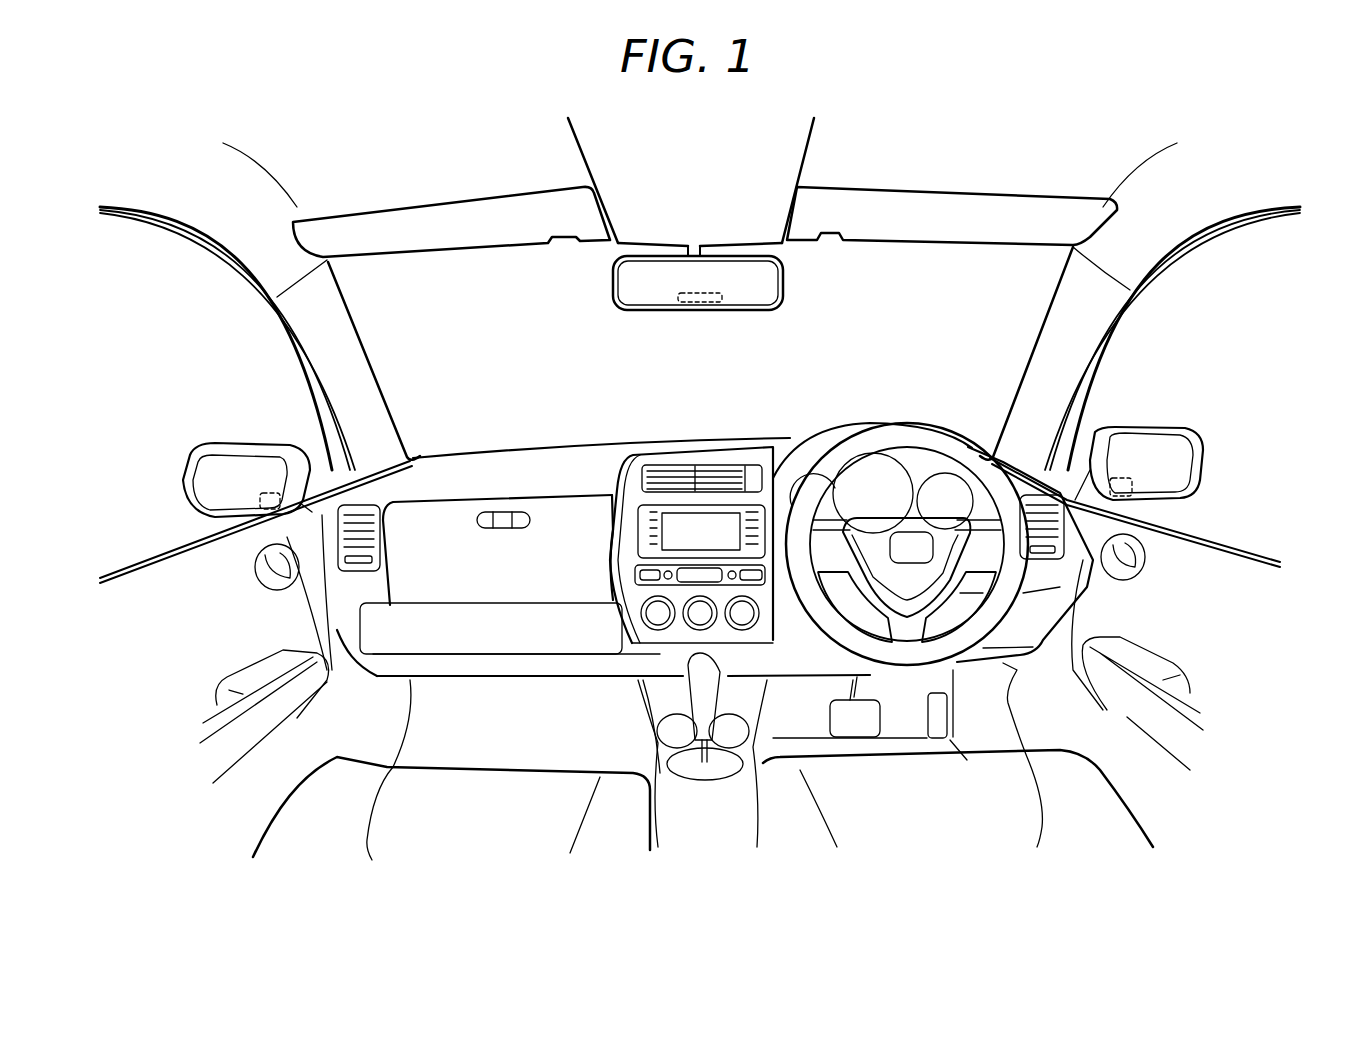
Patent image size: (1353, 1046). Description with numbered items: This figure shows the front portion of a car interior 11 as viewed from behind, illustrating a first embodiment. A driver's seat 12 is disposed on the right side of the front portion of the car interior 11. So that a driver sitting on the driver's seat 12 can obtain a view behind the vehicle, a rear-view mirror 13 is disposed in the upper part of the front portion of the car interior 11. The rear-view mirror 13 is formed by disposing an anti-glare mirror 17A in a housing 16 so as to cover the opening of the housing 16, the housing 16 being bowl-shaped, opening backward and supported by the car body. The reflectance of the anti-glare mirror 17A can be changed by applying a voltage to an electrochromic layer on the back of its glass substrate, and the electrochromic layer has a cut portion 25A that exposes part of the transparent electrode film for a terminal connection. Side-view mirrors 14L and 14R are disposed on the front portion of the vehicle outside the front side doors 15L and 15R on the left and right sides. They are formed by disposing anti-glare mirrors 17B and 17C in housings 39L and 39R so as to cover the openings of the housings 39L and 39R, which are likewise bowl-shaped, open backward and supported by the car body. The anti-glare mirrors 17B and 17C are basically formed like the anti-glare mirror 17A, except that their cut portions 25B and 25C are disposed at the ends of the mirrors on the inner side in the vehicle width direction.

The car interior 11 is at (520, 732).
The driver's seat 12 is at (932, 822).
The rear-view mirror 13 is at (790, 283).
The side-view mirror 14L is at (200, 443).
The side-view mirror 14R is at (1195, 427).
The front side door 15L is at (210, 642).
The front side door 15R is at (1225, 632).
The housing 16 is at (742, 310).
The anti-glare mirror 17A is at (727, 273).
The anti-glare mirror 17B is at (203, 483).
The anti-glare mirror 17C is at (1180, 467).
The cut portion 25A is at (687, 303).
The cut portion 25B is at (300, 500).
The cut portion 25C is at (1120, 507).
The housing 39L is at (267, 440).
The housing 39R is at (1120, 427).